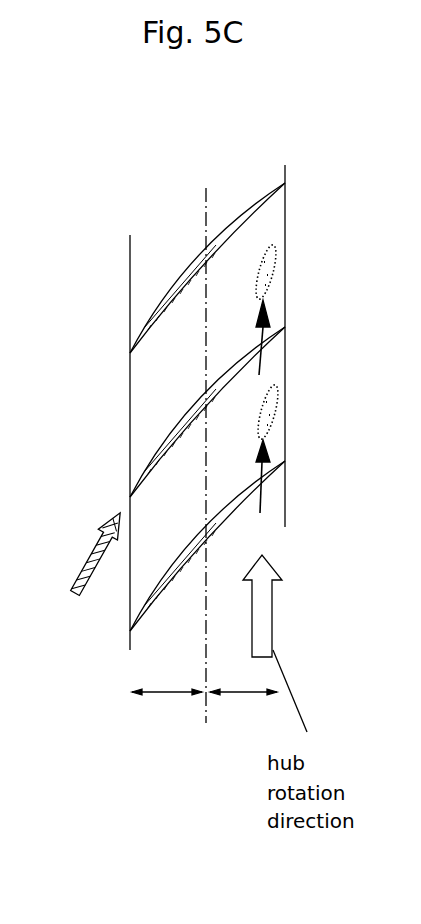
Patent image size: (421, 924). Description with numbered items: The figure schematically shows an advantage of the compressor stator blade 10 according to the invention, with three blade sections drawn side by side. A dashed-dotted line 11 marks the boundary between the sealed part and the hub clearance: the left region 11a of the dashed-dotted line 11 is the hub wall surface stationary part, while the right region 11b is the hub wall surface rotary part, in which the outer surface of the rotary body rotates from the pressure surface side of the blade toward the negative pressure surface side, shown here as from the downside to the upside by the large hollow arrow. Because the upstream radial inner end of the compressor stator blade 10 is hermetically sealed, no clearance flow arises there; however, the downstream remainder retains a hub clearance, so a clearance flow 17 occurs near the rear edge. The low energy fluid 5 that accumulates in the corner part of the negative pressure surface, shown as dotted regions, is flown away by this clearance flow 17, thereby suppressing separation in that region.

The low energy fluid 5 is at (273, 277).
The compressor stator blade 10 is at (157, 303).
The dashed-dotted line 11 is at (202, 193).
The hub wall surface stationary part 11a is at (167, 709).
The hub wall surface rotary part 11b is at (243, 709).
The clearance flow 17 is at (260, 507).